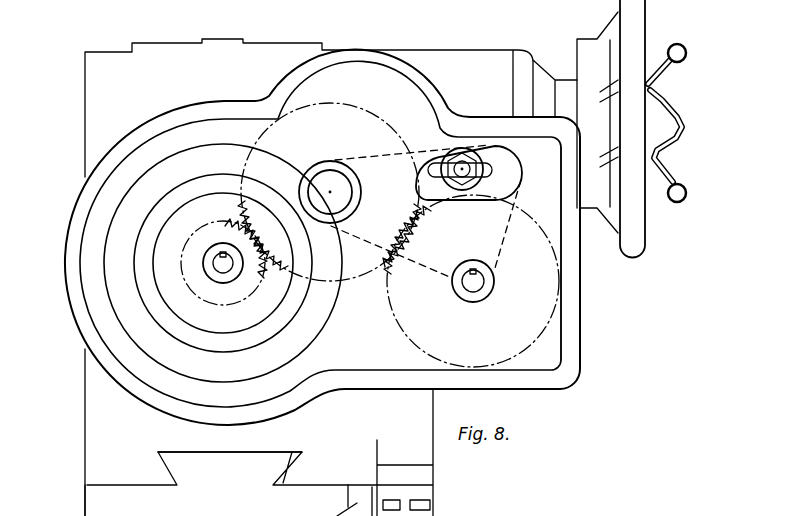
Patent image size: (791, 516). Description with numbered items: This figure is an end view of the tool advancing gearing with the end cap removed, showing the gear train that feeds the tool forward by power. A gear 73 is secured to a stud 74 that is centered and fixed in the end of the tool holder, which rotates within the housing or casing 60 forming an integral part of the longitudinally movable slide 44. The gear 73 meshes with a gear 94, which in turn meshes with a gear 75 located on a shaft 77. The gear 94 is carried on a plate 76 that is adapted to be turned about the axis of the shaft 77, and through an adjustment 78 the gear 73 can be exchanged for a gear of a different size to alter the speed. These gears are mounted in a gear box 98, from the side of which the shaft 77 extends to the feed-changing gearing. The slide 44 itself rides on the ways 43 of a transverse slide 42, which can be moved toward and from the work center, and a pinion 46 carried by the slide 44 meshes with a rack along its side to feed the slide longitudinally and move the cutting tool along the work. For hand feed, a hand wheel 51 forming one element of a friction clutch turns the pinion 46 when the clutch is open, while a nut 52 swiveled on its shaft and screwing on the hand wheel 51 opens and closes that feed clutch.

The housing or casing 60 is at (97, 128).
The gear 94 is at (398, 93).
The gear 73 is at (263, 273).
The stud 74 is at (222, 260).
The gear 75 is at (400, 328).
The shaft 77 is at (473, 283).
The plate 76 is at (502, 193).
The adjustment 78 is at (488, 168).
The gear box 98 is at (573, 303).
The hand wheel 51 is at (640, 13).
The nut 52 is at (680, 120).
The longitudinally movable slide 44 is at (97, 450).
The ways 43 is at (166, 471).
The transverse slide 42 is at (95, 510).
The pinion 46 is at (373, 490).